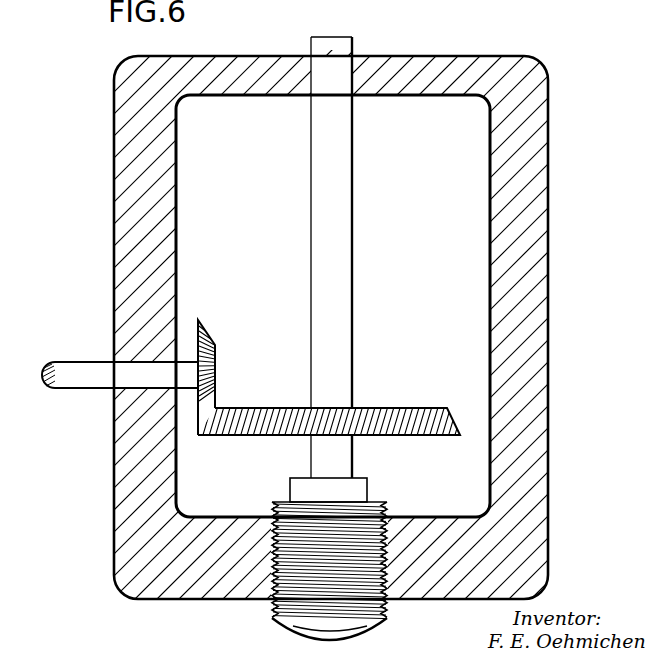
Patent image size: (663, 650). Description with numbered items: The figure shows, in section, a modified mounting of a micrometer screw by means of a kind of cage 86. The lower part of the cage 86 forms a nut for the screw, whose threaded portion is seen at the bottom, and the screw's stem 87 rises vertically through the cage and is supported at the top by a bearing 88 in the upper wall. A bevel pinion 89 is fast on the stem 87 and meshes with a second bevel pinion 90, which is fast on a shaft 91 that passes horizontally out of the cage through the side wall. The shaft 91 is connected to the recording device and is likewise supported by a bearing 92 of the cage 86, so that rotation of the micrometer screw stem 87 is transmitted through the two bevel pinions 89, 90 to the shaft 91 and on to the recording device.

The cage 86 is at (517, 123).
The stem 87 is at (332, 253).
The bearing 88 is at (337, 75).
The bevel pinion 89 is at (238, 436).
The bevel pinion 90 is at (212, 342).
The shaft 91 is at (83, 377).
The bearing 92 is at (153, 372).